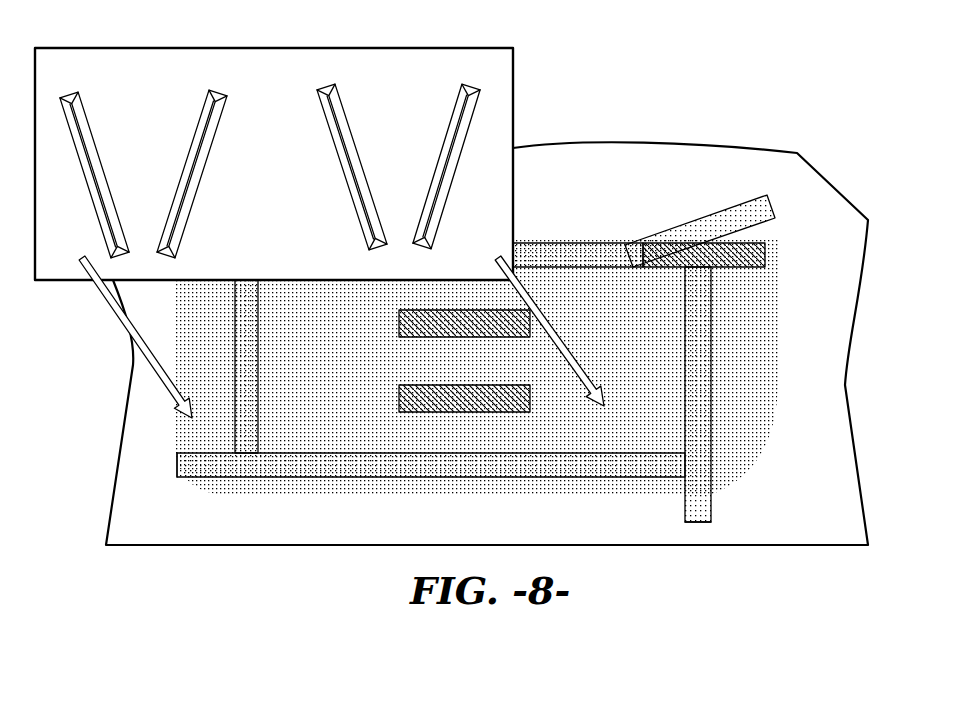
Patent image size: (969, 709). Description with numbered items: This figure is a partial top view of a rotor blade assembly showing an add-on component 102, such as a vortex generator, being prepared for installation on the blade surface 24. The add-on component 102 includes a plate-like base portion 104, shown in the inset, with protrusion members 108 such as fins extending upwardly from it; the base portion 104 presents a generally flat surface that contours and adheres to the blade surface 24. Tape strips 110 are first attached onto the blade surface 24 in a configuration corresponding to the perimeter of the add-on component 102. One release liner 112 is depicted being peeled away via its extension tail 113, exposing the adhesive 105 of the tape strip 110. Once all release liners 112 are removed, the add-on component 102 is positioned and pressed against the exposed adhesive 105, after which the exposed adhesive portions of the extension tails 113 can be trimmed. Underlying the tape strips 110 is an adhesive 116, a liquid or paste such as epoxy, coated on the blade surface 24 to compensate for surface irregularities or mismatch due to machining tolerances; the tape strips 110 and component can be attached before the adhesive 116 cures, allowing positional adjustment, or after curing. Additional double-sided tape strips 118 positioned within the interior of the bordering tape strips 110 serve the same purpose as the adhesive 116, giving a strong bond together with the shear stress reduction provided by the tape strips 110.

The blade surface 24 is at (618, 152).
The add-on component 102 is at (307, 296).
The base portion 104 is at (292, 182).
The exposed adhesive 105 is at (737, 258).
The protrusion member 108 is at (93, 142).
The tape strips 110 is at (235, 345).
The release liner 112 is at (722, 213).
The extension tail 113 is at (197, 477).
The adhesive 116 is at (633, 337).
The additional double-sided tape strips 118 is at (452, 398).